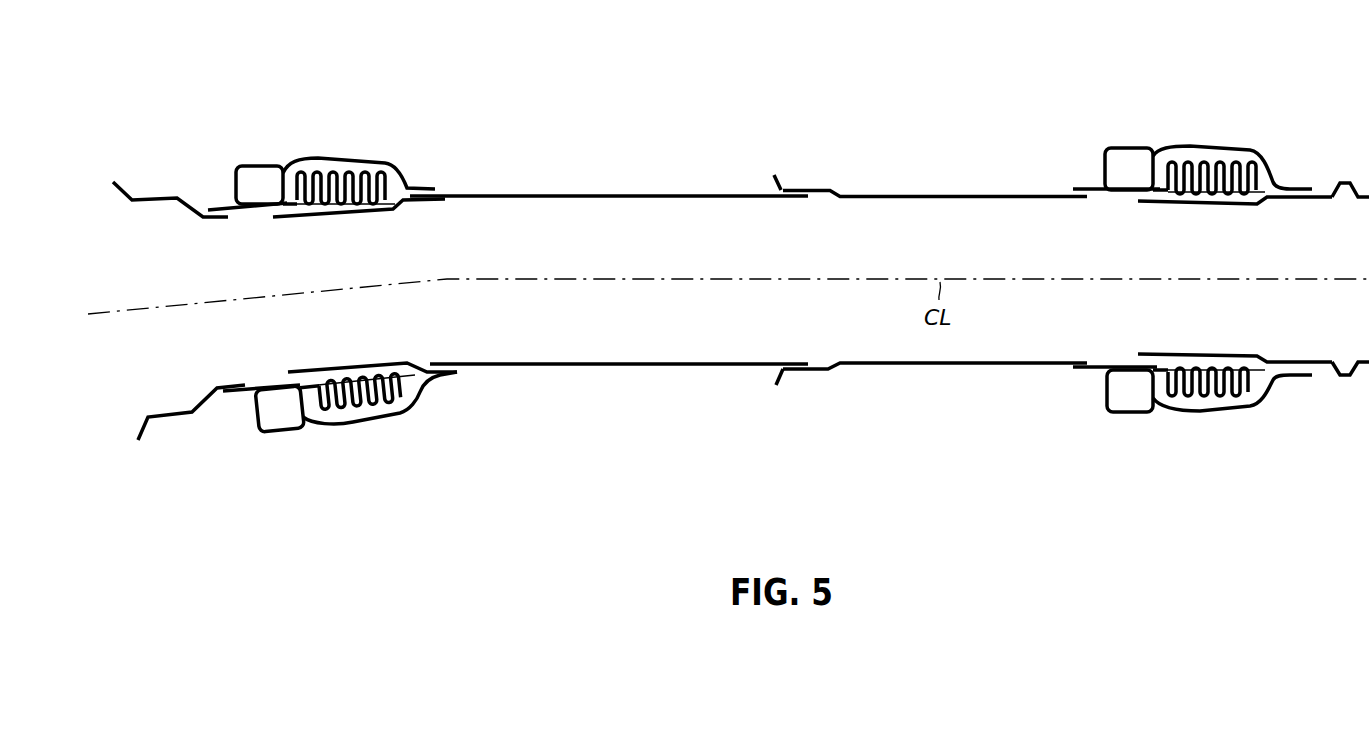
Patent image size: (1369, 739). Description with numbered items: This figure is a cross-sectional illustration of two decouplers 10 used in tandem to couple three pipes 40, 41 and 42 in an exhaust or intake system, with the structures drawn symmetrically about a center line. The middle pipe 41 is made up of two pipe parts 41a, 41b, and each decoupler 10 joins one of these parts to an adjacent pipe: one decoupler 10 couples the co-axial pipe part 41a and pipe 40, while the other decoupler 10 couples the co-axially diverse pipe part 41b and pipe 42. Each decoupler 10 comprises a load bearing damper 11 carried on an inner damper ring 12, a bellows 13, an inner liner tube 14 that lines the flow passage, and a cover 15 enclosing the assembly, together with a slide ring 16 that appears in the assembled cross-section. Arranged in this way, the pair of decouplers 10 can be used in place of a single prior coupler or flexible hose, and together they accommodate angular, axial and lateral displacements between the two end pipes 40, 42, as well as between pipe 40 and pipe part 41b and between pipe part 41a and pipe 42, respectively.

The decoupler 10 is at (1257, 98).
The load bearing damper 11 is at (1106, 170).
The inner damper ring 12 is at (288, 182).
The bellows 13 is at (1198, 162).
The inner liner tube 14 is at (1218, 206).
The cover 15 is at (1259, 153).
The slide ring 16 is at (221, 201).
The pipe 40 is at (1346, 181).
The pipe 41 is at (817, 162).
The pipe part 41a is at (926, 194).
The pipe part 41b is at (601, 193).
The pipe 42 is at (158, 197).